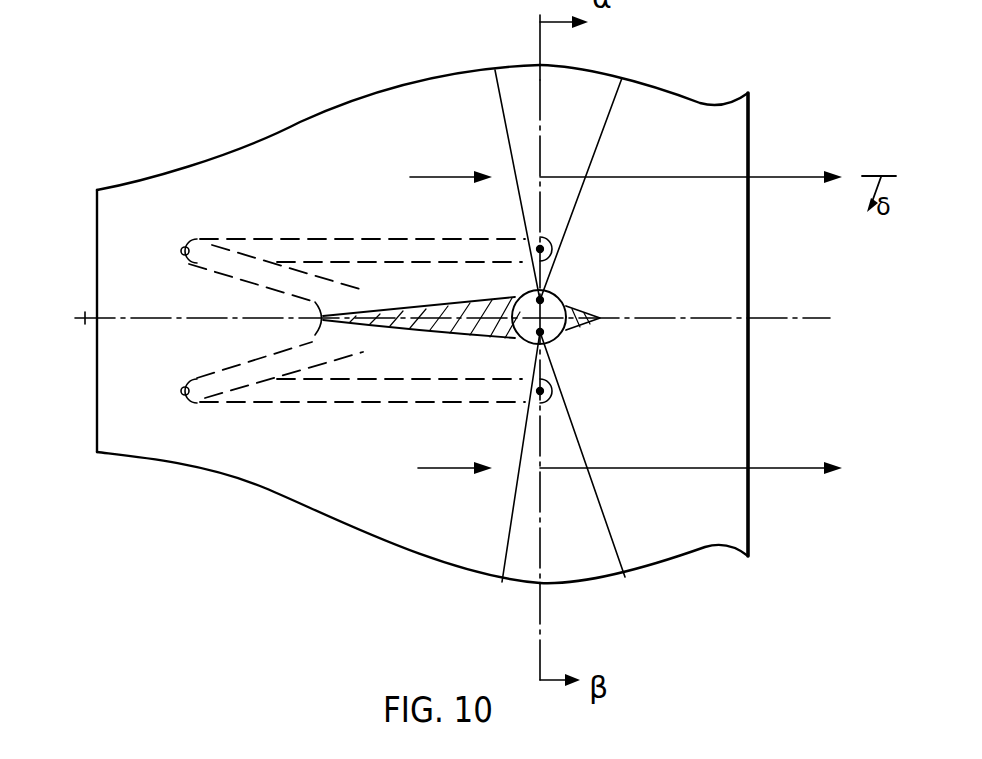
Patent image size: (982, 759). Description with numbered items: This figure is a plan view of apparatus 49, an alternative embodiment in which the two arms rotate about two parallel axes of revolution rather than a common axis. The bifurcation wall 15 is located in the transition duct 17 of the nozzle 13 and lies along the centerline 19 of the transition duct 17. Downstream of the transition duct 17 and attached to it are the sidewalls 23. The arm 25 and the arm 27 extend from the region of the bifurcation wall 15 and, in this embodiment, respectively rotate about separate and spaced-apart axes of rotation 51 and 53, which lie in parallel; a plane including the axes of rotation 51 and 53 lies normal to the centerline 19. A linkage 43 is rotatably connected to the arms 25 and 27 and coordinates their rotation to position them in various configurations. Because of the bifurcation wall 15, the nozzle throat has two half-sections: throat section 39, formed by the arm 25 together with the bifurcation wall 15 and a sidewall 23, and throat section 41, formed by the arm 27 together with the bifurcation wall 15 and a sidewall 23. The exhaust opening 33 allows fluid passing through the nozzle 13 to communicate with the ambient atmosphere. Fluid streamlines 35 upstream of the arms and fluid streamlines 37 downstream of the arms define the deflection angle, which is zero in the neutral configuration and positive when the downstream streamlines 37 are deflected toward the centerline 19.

The nozzle 13 is at (162, 172).
The bifurcation wall 15 is at (470, 330).
The transition duct 17 is at (200, 468).
The centerline 19 is at (85, 316).
The sidewalls 23 is at (615, 71).
The arm 25 is at (605, 110).
The arm 27 is at (578, 573).
The exhaust opening 33 is at (748, 518).
The fluid streamlines 35 is at (418, 179).
The fluid streamlines 37 is at (767, 180).
The throat section 39 is at (541, 133).
The throat section 41 is at (541, 508).
The linkage 43 is at (236, 362).
The apparatus 49 is at (330, 106).
The axis of rotation 51 is at (543, 298).
The axis of rotation 53 is at (543, 334).